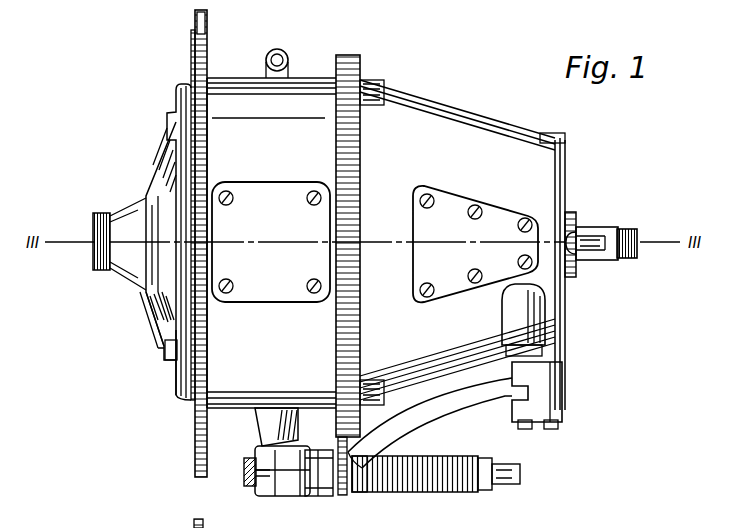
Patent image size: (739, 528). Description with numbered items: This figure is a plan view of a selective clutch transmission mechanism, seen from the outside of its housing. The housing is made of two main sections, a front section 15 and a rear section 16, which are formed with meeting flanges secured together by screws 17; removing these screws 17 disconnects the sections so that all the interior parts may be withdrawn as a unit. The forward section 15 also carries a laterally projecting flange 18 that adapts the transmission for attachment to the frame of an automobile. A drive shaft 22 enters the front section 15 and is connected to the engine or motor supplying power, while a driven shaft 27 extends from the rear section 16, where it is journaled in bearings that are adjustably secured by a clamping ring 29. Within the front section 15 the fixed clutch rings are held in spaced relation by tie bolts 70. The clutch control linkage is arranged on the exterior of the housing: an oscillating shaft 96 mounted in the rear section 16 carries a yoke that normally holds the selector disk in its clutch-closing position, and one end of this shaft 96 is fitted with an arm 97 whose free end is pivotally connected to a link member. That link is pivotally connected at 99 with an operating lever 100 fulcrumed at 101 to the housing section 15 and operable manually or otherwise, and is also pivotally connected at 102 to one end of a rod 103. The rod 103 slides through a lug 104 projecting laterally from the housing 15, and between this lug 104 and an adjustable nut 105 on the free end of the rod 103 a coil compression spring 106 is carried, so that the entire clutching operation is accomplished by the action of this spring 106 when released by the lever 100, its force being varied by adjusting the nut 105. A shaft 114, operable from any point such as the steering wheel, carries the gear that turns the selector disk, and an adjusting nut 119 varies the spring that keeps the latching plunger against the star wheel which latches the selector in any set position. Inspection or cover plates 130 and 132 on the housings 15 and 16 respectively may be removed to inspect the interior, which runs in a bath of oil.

The front housing section 15 is at (218, 108).
The rear housing section 16 is at (456, 116).
The screws 17 is at (384, 86).
The laterally projecting flange 18 is at (193, 468).
The drive shaft 22 is at (100, 268).
The driven shaft 27 is at (603, 230).
The clamping ring 29 is at (574, 214).
The tie bolts 70 is at (168, 352).
The oscillating shaft 96 is at (562, 372).
The arm 97 is at (495, 412).
The pivotal connection 99 is at (290, 497).
The operating lever 100 is at (248, 474).
The fulcrum 101 is at (268, 440).
The pivotal connection 102 is at (322, 494).
The rod 103 is at (520, 476).
The lug 104 is at (347, 456).
The adjustable nut 105 is at (487, 490).
The coil compression spring 106 is at (415, 492).
The shaft 114 is at (590, 252).
The adjusting nut 119 is at (548, 340).
The cover plate 130 is at (296, 258).
The cover plate 132 is at (475, 244).